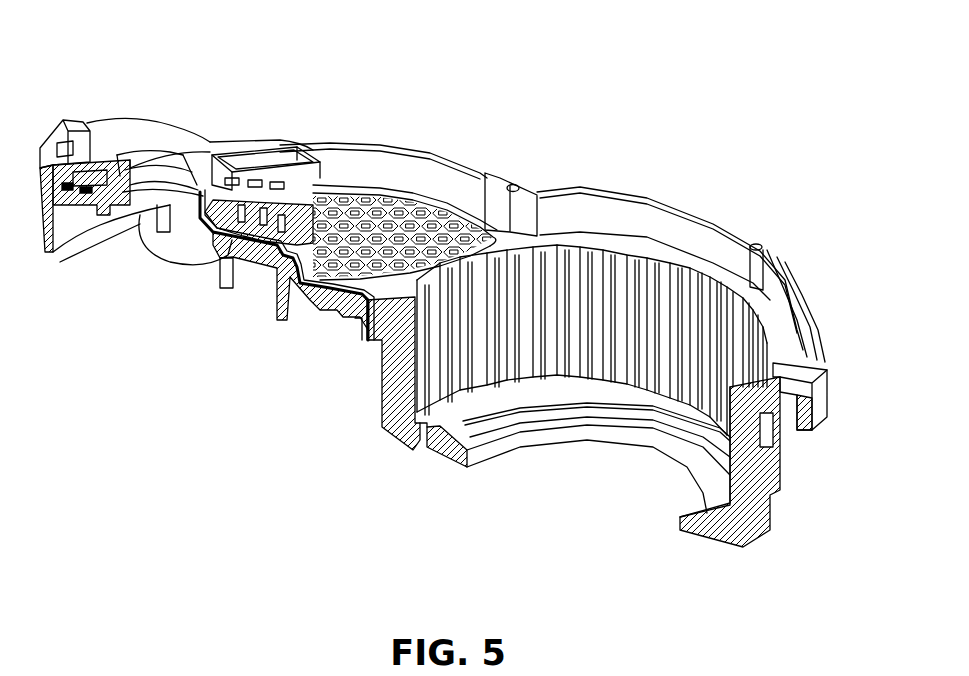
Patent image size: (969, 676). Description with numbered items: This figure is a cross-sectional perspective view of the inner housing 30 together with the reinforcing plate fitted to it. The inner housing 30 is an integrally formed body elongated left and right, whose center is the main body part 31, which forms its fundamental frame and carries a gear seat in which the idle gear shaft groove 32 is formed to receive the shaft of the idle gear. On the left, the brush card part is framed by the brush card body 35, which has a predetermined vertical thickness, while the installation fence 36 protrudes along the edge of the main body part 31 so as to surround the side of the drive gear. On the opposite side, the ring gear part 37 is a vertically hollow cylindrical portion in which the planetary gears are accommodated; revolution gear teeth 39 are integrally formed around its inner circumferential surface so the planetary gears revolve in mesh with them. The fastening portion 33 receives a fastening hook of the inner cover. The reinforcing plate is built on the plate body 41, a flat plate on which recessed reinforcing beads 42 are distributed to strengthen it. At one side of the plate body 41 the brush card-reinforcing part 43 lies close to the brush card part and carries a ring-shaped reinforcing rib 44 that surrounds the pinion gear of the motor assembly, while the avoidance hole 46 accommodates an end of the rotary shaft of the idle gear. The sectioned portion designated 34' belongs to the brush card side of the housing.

The inner housing 30 is at (440, 495).
The main body part 31 is at (265, 278).
The idle gear shaft groove 32 is at (350, 177).
The fastening portion 33 is at (827, 417).
The rear cover 34' is at (160, 99).
The brush card body 35 is at (218, 262).
The installation fence 36 is at (457, 167).
The ring gear part 37 is at (690, 530).
The revolution gear teeth 39 is at (647, 275).
The plate body 41 is at (300, 285).
The reinforcing beads 42 is at (240, 265).
The brush card-reinforcing part 43 is at (205, 230).
The reinforcing rib 44 is at (155, 205).
The avoidance hole 46 is at (275, 160).